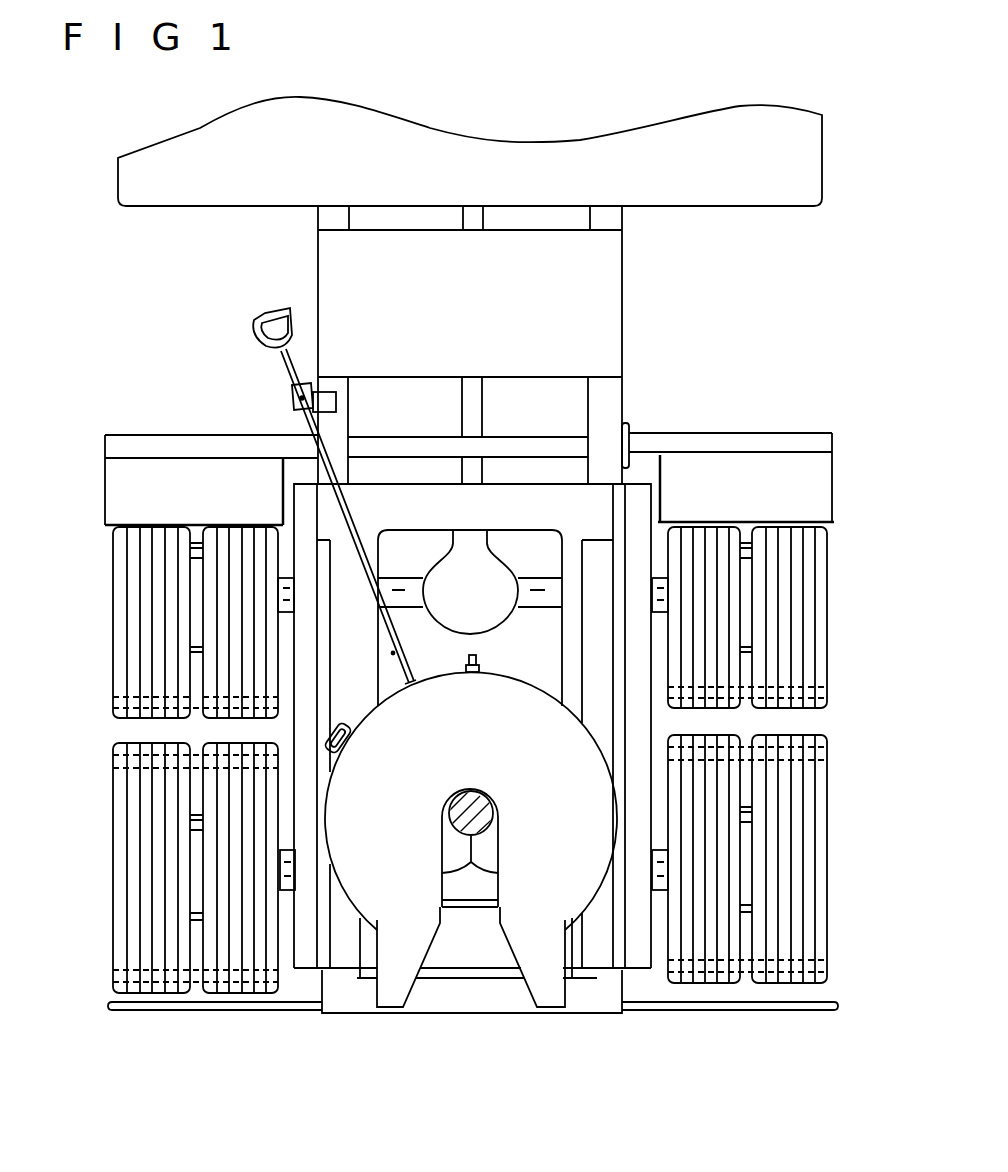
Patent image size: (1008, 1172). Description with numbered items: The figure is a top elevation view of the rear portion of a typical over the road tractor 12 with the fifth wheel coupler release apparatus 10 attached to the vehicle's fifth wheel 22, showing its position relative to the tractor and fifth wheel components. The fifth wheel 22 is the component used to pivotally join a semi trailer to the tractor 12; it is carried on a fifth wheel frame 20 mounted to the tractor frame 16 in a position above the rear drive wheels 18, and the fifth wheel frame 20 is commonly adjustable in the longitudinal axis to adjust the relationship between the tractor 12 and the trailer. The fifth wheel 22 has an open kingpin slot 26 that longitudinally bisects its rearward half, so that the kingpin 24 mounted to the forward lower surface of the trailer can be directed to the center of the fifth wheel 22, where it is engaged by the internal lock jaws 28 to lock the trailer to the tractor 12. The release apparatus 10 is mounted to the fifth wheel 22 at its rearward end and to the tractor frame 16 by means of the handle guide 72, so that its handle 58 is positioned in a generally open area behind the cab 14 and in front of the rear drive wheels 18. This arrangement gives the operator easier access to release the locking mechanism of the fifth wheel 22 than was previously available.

The fifth wheel coupler release apparatus 10 is at (222, 358).
The tractor 12 is at (308, 244).
The cab 14 is at (692, 206).
The tractor frame 16 is at (622, 390).
The rear drive wheels 18 is at (112, 752).
The fifth wheel frame 20 is at (293, 798).
The fifth wheel 22 is at (340, 845).
The kingpin 24 is at (494, 838).
The kingpin slot 26 is at (427, 957).
The internal lock jaws 28 is at (477, 873).
The handle 58 is at (250, 322).
The handle guide 72 is at (293, 400).